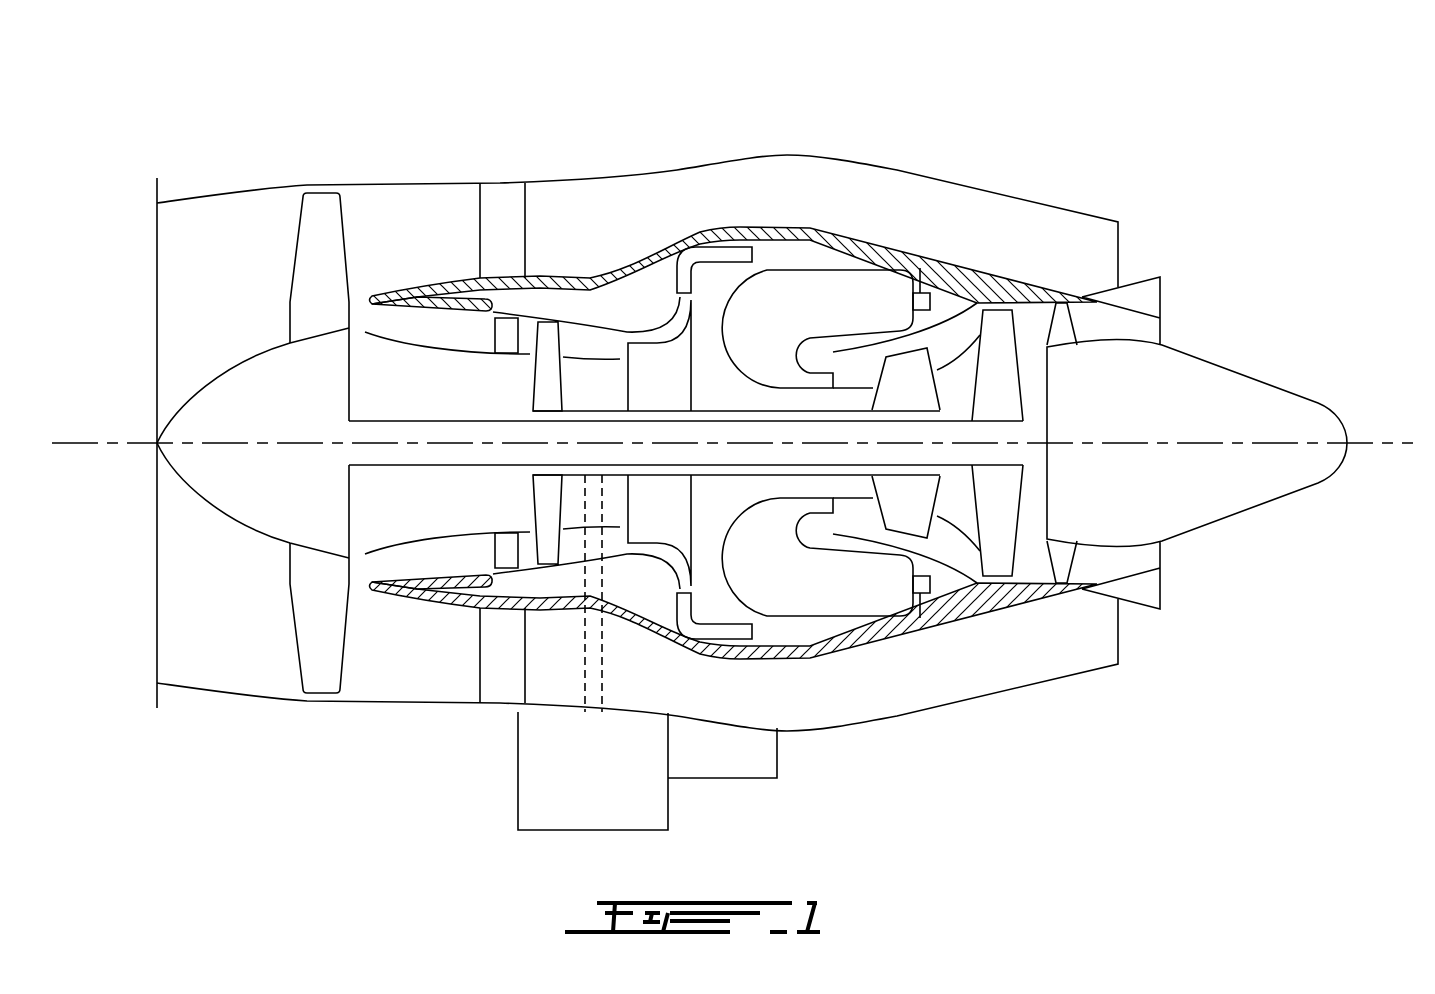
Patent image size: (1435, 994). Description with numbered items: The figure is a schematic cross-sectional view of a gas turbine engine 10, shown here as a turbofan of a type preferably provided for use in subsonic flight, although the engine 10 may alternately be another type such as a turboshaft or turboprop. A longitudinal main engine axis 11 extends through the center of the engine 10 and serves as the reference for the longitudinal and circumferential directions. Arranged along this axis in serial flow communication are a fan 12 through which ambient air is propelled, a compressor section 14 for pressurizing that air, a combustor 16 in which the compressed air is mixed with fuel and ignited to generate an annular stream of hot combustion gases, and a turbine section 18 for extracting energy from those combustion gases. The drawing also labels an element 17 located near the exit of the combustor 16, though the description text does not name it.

The gas turbine engine 10 is at (930, 145).
The longitudinal main engine axis 11 is at (1387, 443).
The fan 12 is at (315, 604).
The compressor section 14 is at (583, 337).
The combustor 16 is at (813, 293).
The turbine inlet vane 17 is at (925, 297).
The turbine section 18 is at (953, 512).